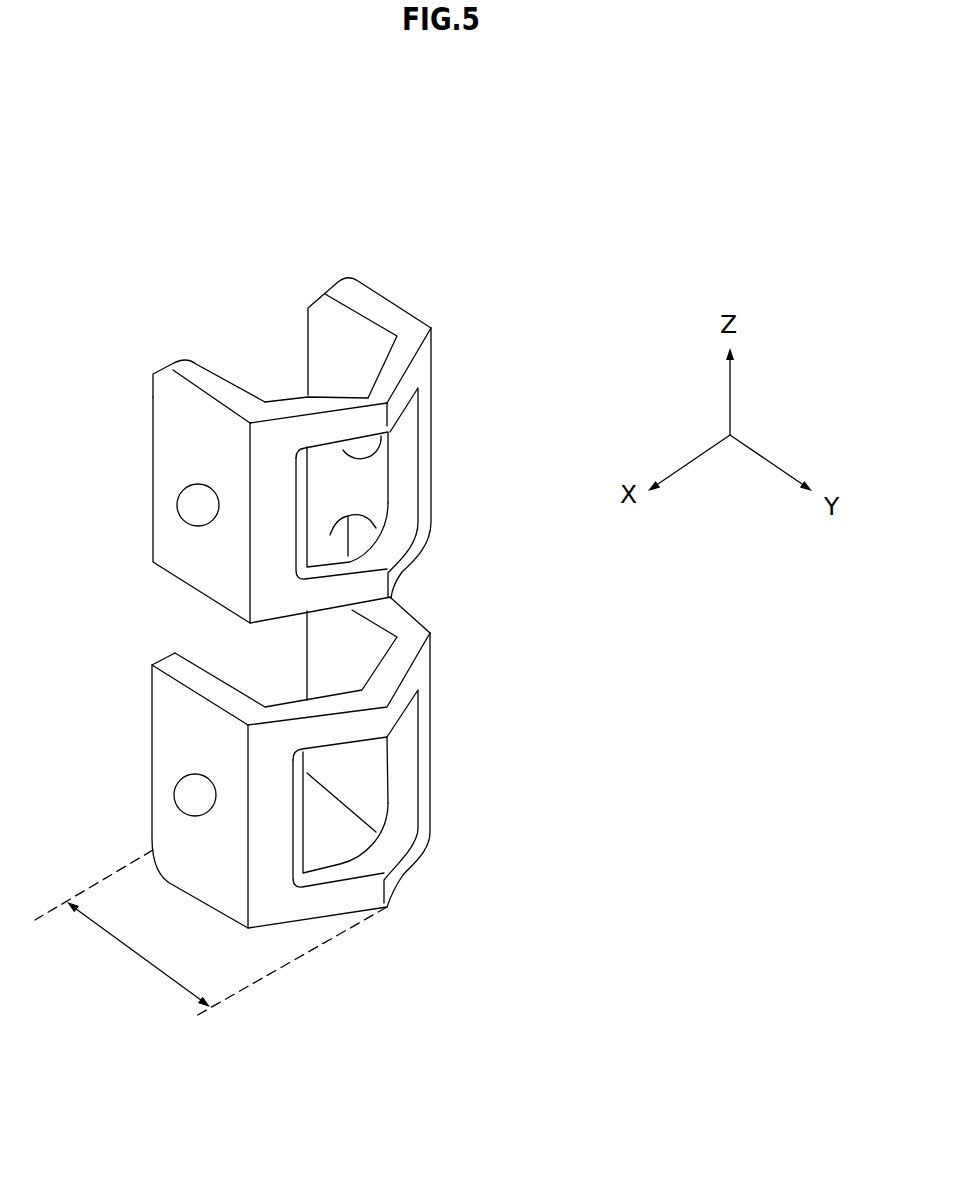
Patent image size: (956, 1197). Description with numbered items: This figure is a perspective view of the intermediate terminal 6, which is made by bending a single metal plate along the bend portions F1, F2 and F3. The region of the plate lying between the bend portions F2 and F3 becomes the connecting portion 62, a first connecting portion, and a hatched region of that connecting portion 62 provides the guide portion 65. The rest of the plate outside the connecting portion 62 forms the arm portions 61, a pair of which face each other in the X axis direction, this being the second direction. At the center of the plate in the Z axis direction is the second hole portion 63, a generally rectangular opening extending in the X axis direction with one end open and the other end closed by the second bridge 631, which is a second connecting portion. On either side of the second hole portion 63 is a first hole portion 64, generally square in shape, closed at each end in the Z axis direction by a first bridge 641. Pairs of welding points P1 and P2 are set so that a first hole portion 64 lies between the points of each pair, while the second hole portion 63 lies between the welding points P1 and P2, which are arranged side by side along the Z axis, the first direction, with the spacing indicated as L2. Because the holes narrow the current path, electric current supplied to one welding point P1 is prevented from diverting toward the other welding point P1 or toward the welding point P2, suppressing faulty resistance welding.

The intermediate terminal 6 is at (434, 228).
The arm portion 61 is at (371, 331).
The connecting portion 62 is at (295, 432).
The second hole portion 63 is at (177, 668).
The first hole portion 64 is at (408, 455).
The guide portion 65 is at (432, 397).
The second bridge 631 is at (362, 517).
The first bridge 641 is at (405, 385).
The bend portion F1 is at (367, 402).
The bend portion F2 is at (250, 444).
The bend portion F3 is at (433, 347).
The welding point P1 is at (176, 519).
The welding point P2 is at (176, 801).
The length L2 is at (211, 933).